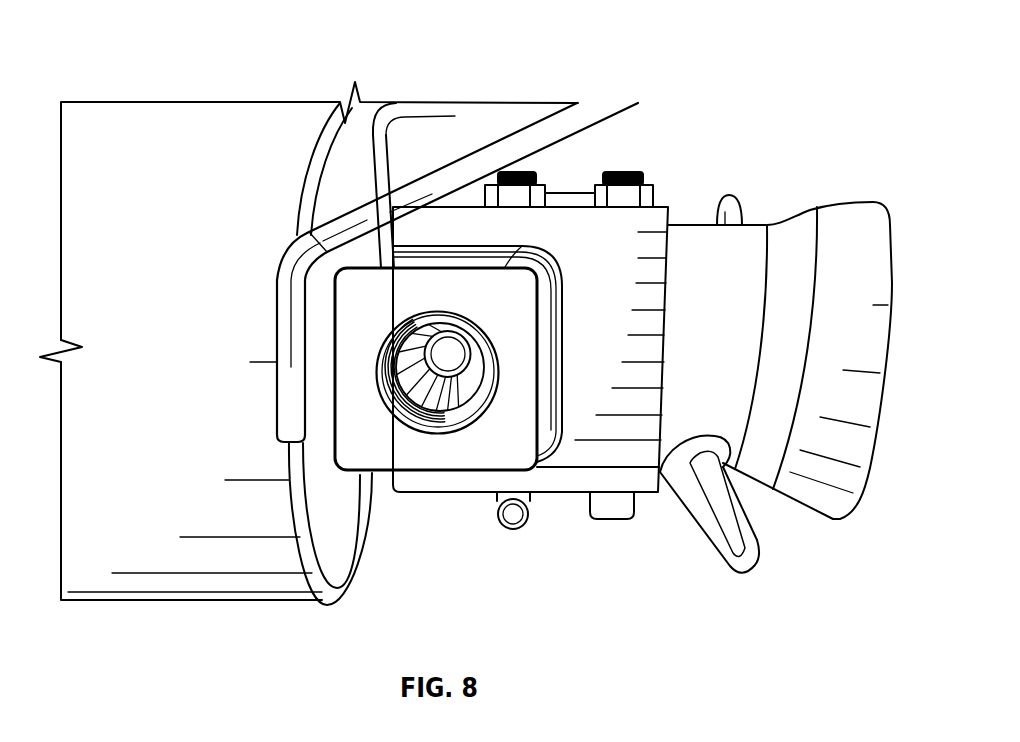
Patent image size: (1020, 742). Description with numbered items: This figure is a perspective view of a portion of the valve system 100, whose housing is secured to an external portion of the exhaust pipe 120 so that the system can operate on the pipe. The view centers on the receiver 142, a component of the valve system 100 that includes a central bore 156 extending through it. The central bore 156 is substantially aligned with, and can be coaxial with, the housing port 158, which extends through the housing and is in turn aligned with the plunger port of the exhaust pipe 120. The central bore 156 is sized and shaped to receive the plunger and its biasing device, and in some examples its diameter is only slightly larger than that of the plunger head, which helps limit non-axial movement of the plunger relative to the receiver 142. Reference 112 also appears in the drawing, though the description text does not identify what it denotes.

The valve system 100 is at (748, 74).
The housing 112 is at (566, 533).
The exhaust pipe 120 is at (693, 241).
The receiver 142 is at (520, 292).
The central bore 156 is at (378, 358).
The housing port 158 is at (420, 332).